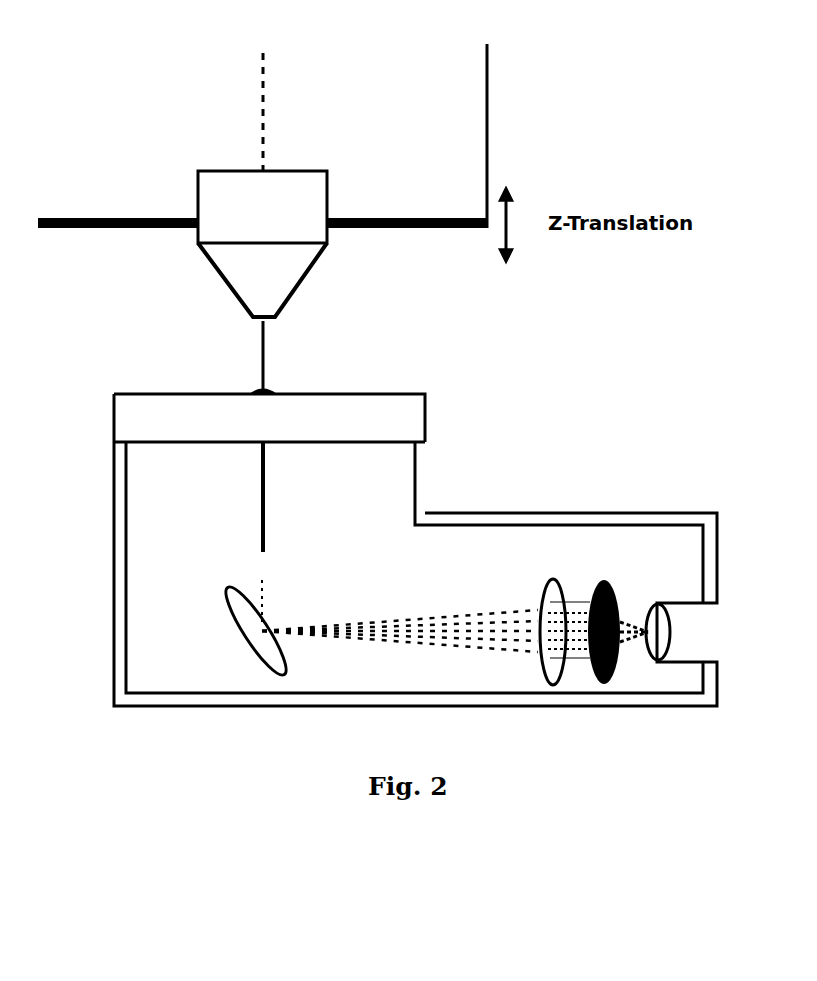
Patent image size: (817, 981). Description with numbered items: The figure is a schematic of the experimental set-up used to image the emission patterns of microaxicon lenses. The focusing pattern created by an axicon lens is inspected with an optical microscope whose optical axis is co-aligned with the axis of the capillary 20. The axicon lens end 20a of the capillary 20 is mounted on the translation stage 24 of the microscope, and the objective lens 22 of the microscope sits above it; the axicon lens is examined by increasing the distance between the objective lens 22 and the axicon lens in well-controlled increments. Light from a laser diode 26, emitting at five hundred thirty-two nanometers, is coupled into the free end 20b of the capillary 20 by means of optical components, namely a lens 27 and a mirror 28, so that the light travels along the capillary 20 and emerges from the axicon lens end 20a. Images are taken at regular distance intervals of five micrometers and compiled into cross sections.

The objective lens 22 is at (220, 278).
The axicon lens end 20a is at (268, 327).
The translation stage 24 is at (427, 418).
The capillary 20 is at (265, 485).
The free end 20b is at (265, 550).
The mirror 28 is at (222, 593).
The lens 27 is at (543, 592).
The laser diode 26 is at (660, 630).